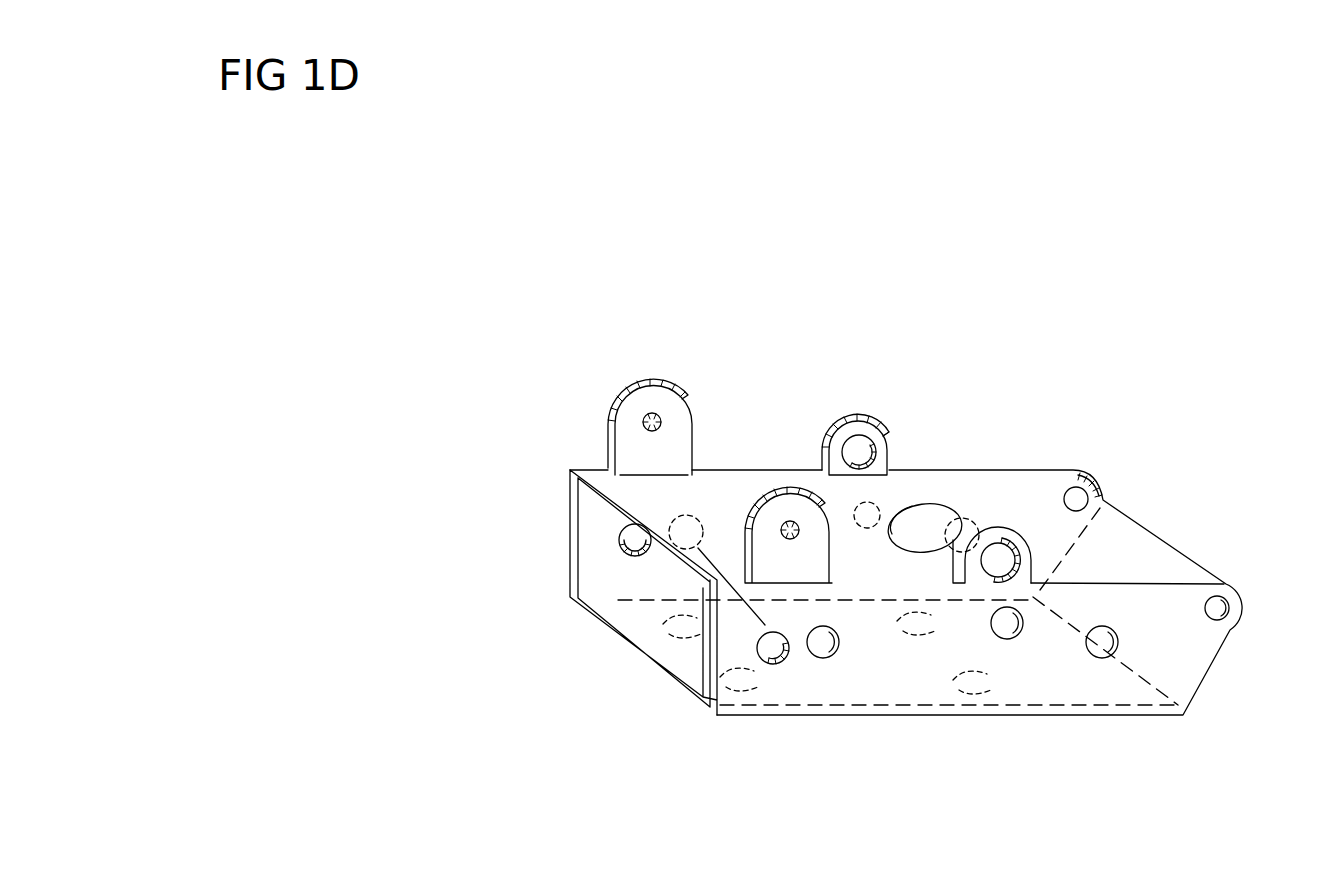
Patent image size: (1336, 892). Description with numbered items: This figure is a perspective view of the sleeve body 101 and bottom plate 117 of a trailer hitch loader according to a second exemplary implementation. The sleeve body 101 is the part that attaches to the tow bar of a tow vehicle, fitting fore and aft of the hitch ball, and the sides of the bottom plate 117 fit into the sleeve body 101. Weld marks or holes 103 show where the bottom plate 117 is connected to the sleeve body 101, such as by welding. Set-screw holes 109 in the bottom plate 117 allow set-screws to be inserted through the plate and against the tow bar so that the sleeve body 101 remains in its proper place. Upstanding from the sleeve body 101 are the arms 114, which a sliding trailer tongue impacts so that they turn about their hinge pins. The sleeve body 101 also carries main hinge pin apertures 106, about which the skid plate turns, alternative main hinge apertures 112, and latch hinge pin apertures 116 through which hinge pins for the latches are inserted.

The sleeve body 101 is at (773, 468).
The weld marks 103 is at (961, 545).
The main hinge pin apertures 106 is at (997, 556).
The set-screw holes 109 is at (768, 647).
The arm hole 112 is at (880, 510).
The arms 114 is at (789, 527).
The latch hinge aperture 116 is at (1092, 500).
The bottom plate 117 is at (620, 650).